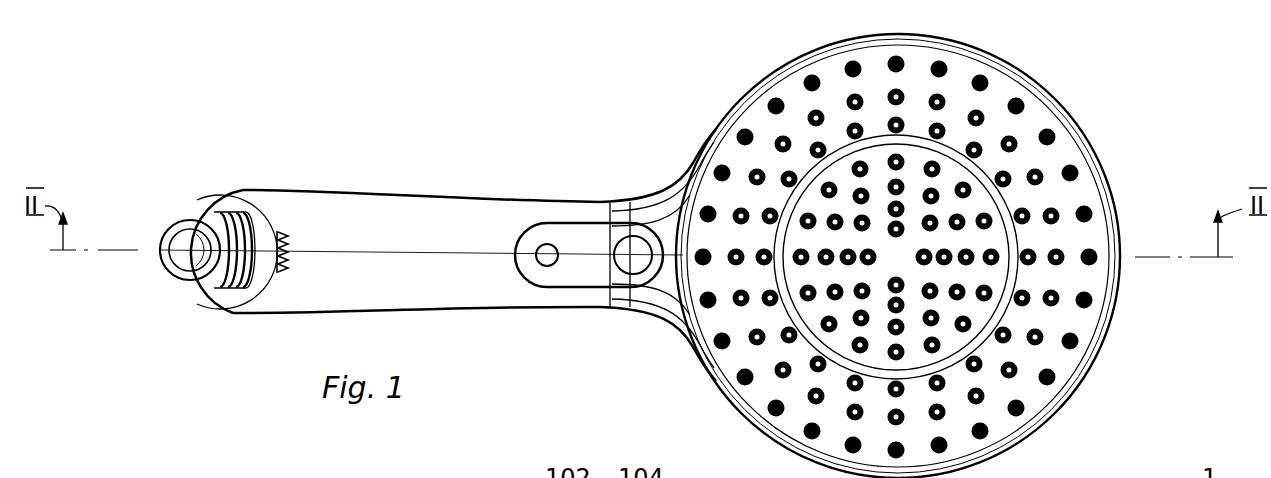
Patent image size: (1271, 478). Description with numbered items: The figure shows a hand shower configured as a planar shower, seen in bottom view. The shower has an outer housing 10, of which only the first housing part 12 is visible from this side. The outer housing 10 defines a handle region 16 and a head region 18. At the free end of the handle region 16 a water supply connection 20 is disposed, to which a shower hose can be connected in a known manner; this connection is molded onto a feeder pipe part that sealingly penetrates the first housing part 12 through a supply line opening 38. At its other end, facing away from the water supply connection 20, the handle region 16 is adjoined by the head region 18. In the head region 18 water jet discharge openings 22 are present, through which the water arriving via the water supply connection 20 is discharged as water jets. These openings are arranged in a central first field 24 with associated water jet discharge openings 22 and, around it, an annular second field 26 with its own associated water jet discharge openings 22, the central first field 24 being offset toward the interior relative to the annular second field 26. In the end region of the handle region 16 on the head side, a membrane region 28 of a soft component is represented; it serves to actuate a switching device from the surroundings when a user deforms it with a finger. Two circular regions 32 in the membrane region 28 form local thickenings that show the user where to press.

The outer housing 10 is at (317, 193).
The first housing part 12 is at (297, 300).
The handle region 16 is at (384, 292).
The head region 18 is at (723, 110).
The water supply connection 20 is at (177, 277).
The water jet discharge openings 22 is at (1040, 178).
The central first field 24 is at (973, 307).
The annular second field 26 is at (1037, 395).
The membrane region 28 is at (574, 237).
The circular regions 32 is at (543, 245).
The supply line opening 38 is at (213, 293).